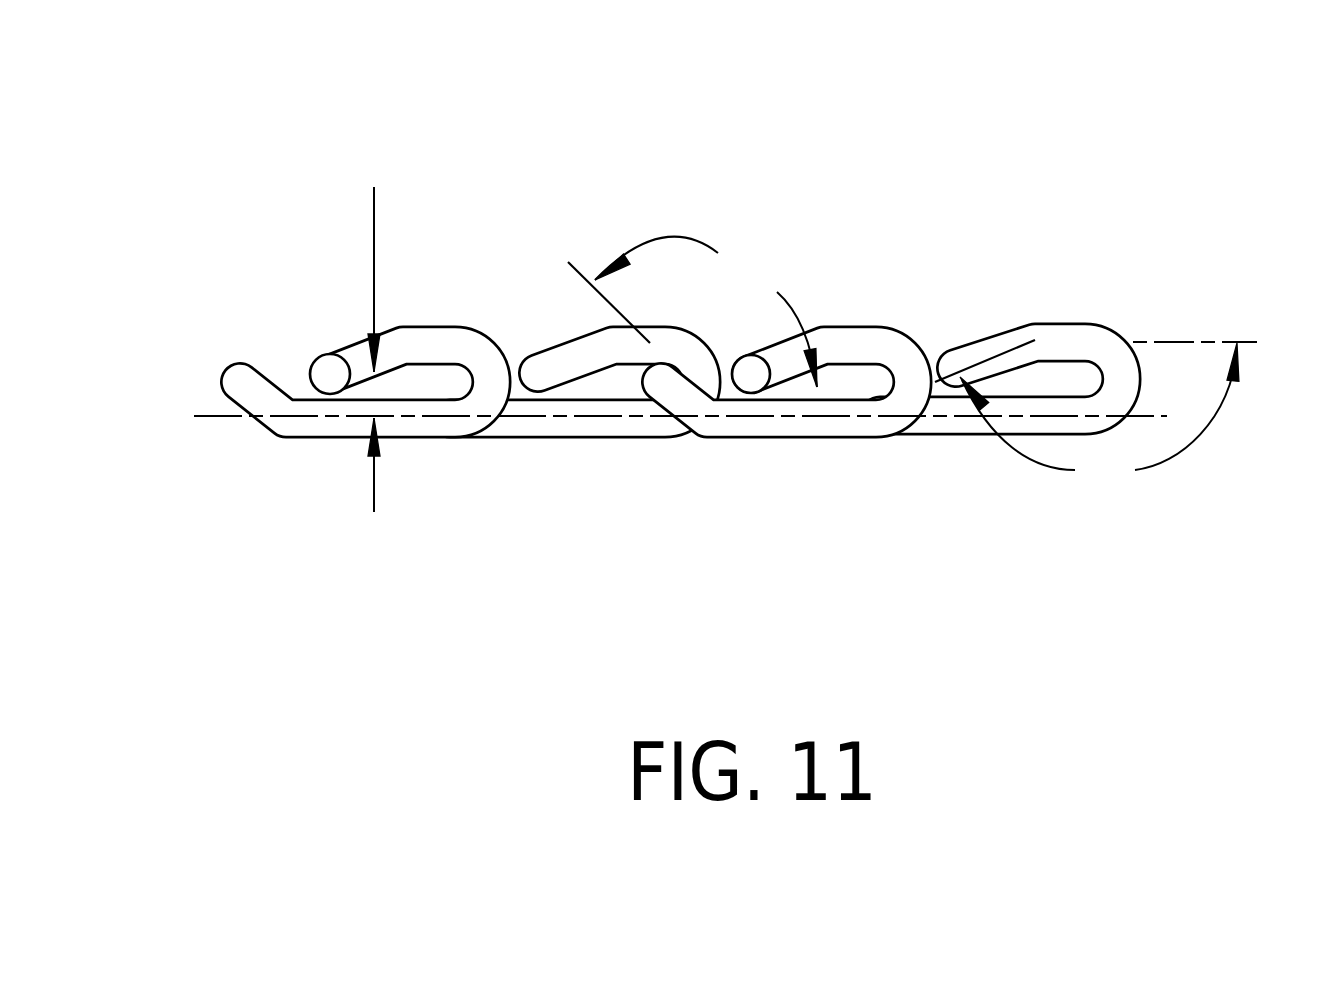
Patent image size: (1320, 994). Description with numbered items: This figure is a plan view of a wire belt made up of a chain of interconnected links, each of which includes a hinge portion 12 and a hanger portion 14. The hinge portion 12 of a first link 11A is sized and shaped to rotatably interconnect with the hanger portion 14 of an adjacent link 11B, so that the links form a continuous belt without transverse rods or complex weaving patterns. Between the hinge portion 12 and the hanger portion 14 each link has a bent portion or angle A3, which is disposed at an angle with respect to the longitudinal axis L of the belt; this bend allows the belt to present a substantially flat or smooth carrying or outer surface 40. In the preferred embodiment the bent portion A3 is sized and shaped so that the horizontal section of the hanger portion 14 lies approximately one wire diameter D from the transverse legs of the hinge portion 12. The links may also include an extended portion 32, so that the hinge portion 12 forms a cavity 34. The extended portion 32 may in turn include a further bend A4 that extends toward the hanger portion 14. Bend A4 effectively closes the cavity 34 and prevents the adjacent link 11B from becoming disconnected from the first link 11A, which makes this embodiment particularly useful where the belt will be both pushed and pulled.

The hinge portion 12 is at (910, 337).
The outer surface 40 is at (1055, 320).
The extended portion 32 is at (451, 381).
The cavity 34 is at (616, 515).
The first link 11A is at (337, 452).
The adjacent link 11B is at (515, 438).
The hanger portion 14 is at (616, 515).
The wire diameter D is at (374, 187).
The longitudinal axis L is at (194, 416).
The bent portion/angle A3 is at (692, 312).
The bend A4 is at (1096, 416).